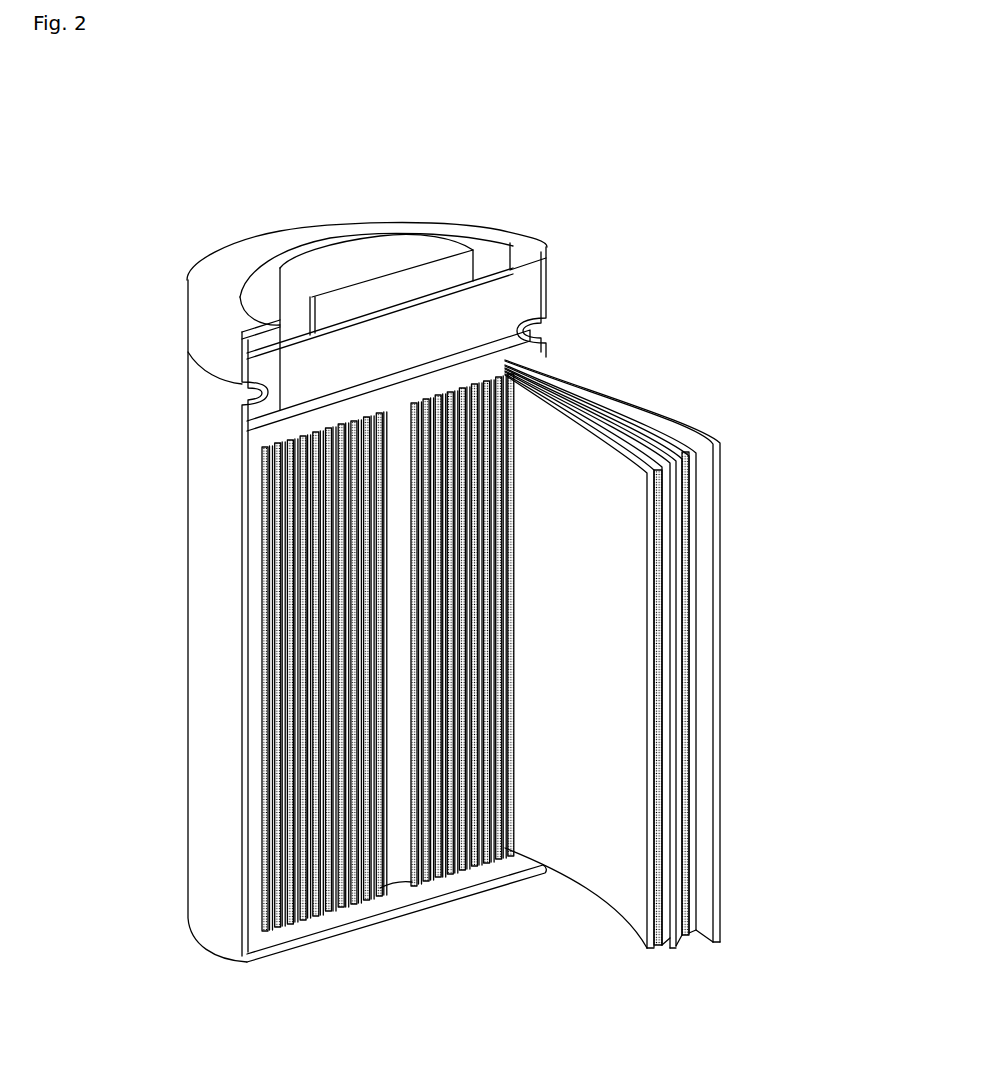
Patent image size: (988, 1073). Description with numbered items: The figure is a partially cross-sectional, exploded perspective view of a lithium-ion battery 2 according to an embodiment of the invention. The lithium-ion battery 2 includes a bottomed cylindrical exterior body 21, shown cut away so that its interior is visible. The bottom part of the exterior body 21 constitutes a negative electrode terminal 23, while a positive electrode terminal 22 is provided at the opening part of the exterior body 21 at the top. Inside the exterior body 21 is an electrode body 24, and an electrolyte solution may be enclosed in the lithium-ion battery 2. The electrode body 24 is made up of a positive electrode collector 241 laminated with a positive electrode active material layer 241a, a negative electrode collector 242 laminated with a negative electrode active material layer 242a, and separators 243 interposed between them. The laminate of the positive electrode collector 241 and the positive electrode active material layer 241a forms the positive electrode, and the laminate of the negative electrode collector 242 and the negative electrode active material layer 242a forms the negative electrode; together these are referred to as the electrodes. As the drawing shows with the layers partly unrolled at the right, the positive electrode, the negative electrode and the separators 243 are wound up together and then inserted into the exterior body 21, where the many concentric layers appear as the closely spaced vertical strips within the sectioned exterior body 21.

The lithium-ion battery 2 is at (590, 161).
The exterior body 21 is at (203, 676).
The positive electrode terminal 22 is at (362, 250).
The negative electrode terminal 23 is at (397, 923).
The electrode body 24 is at (560, 664).
The positive electrode collector 241 is at (628, 920).
The positive electrode active material layer 241a is at (661, 612).
The negative electrode collector 242 is at (690, 448).
The negative electrode active material layer 242a is at (690, 668).
The separators 243 is at (628, 422).